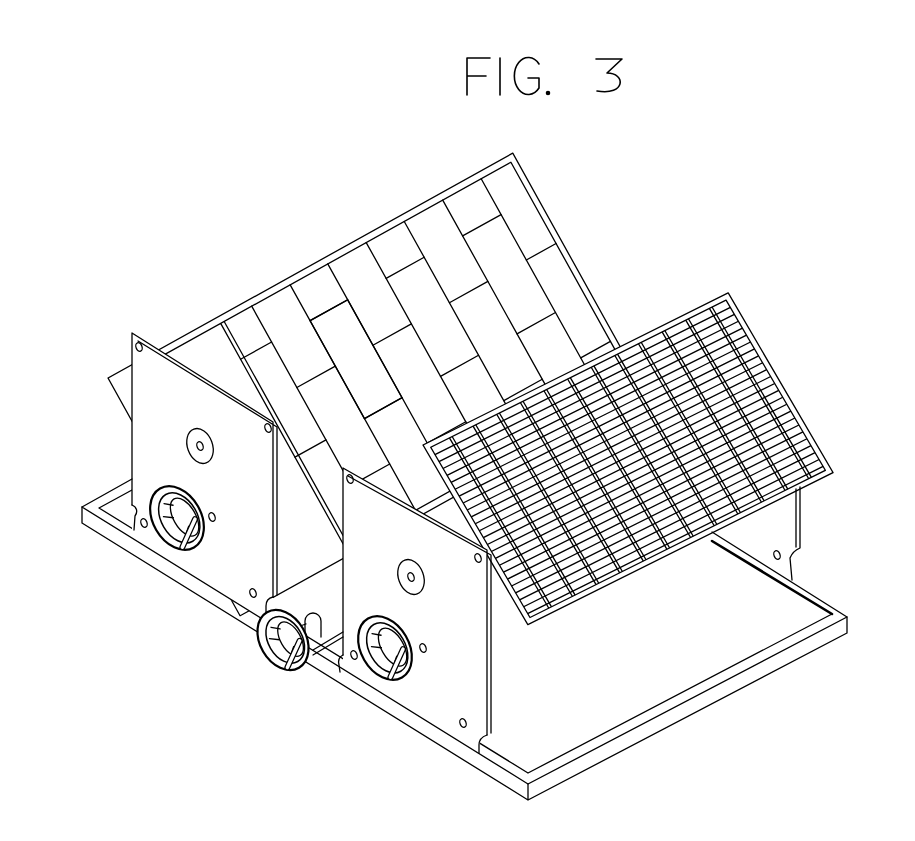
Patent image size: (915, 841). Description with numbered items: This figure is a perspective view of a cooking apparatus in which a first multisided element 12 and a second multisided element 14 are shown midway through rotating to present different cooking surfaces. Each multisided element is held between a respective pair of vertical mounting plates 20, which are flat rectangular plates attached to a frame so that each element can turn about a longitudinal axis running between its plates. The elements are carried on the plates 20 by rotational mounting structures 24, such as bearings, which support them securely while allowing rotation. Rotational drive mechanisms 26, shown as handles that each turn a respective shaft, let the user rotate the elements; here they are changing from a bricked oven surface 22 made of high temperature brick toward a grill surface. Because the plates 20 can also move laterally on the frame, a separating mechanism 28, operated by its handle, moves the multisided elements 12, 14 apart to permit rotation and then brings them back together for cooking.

The first multisided element 12 is at (407, 187).
The second multisided element 14 is at (737, 289).
The vertical mounting plates 20 is at (145, 440).
The bricked oven surface 22 is at (333, 333).
The rotational mounting structures 24 is at (190, 452).
The rotational drive mechanisms 26 is at (170, 532).
The separating mechanism 28 is at (263, 650).